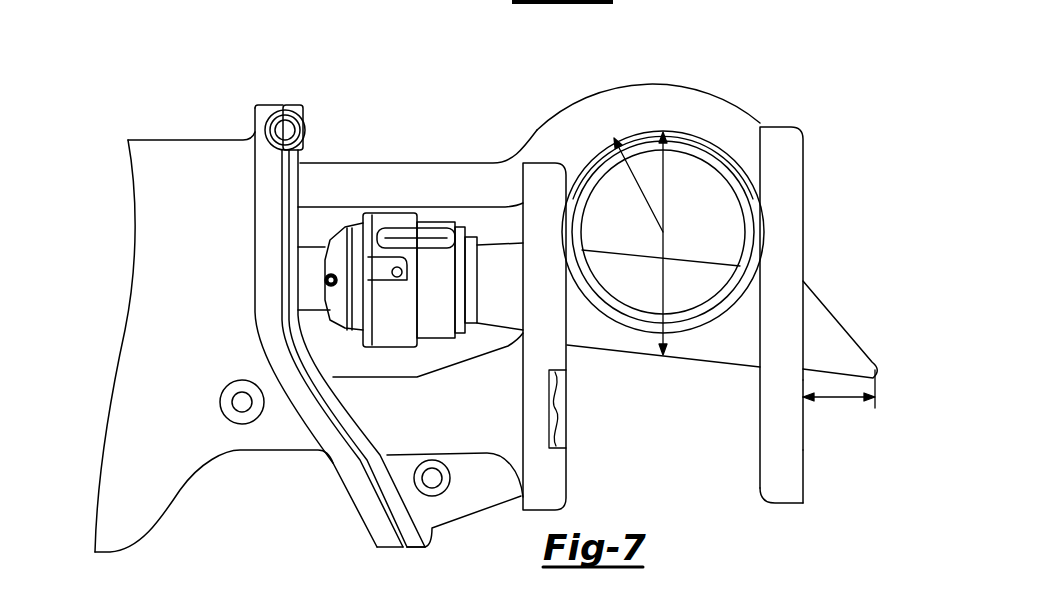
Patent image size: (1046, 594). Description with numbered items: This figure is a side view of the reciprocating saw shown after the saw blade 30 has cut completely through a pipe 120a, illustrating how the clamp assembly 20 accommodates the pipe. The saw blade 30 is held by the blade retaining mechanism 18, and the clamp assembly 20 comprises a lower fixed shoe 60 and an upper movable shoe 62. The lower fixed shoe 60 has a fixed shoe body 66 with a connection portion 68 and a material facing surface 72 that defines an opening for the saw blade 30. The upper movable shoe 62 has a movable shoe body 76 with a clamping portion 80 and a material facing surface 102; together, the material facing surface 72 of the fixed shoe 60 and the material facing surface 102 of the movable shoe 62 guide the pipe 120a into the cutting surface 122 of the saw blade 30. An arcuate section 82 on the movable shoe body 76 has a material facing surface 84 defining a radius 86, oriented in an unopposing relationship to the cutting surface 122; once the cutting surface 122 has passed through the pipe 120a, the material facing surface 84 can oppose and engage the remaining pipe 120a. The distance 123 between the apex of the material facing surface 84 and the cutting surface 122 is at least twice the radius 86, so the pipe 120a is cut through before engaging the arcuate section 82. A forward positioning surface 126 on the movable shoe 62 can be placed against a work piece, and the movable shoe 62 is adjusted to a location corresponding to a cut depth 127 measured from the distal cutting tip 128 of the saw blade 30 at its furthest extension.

The blade retaining mechanism 18 is at (387, 218).
The clamp assembly 20 is at (707, 295).
The saw blade 30 is at (600, 338).
The lower fixed shoe 60 is at (425, 422).
The upper movable shoe 62 is at (795, 195).
The fixed shoe body 66 is at (490, 423).
The connection portion 68 is at (388, 422).
The material facing surface 72 is at (570, 465).
The movable shoe body 76 is at (778, 497).
The clamping portion 80 is at (803, 445).
The arcuate section 82 is at (658, 93).
The material facing surface 84 is at (696, 142).
The radius 86 is at (640, 195).
The material facing surface 102 is at (757, 453).
The pipe 120a is at (720, 307).
The cutting surface 122 is at (654, 357).
The distance 123 is at (665, 248).
The forward positioning surface 126 is at (806, 470).
The cut depth 127 is at (838, 397).
The distal cutting tip 128 is at (887, 363).